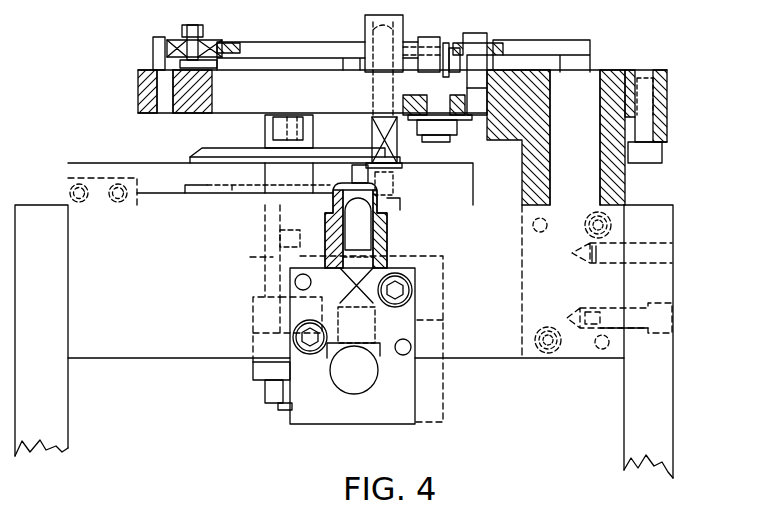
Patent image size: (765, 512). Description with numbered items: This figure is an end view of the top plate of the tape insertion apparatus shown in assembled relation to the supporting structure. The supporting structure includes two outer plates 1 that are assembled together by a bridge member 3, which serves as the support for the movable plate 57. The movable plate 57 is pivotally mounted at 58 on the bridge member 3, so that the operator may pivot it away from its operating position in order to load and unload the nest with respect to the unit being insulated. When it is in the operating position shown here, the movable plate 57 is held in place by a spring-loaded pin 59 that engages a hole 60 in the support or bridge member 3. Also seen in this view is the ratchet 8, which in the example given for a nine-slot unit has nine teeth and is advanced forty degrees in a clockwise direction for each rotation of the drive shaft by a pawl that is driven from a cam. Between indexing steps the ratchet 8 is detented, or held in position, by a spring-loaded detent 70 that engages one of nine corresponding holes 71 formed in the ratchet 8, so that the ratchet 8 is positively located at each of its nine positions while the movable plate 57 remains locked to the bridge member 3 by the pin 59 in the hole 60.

The outer plates 1 is at (57, 398).
The bridge member 3 is at (187, 303).
The ratchet 8 is at (387, 209).
The movable plate 57 is at (138, 92).
The pivot 58 is at (587, 87).
The spring-loaded pin 59 is at (398, 32).
The hole 60 is at (395, 180).
The spring-loaded detent 70 is at (366, 237).
The holes 71 is at (358, 188).